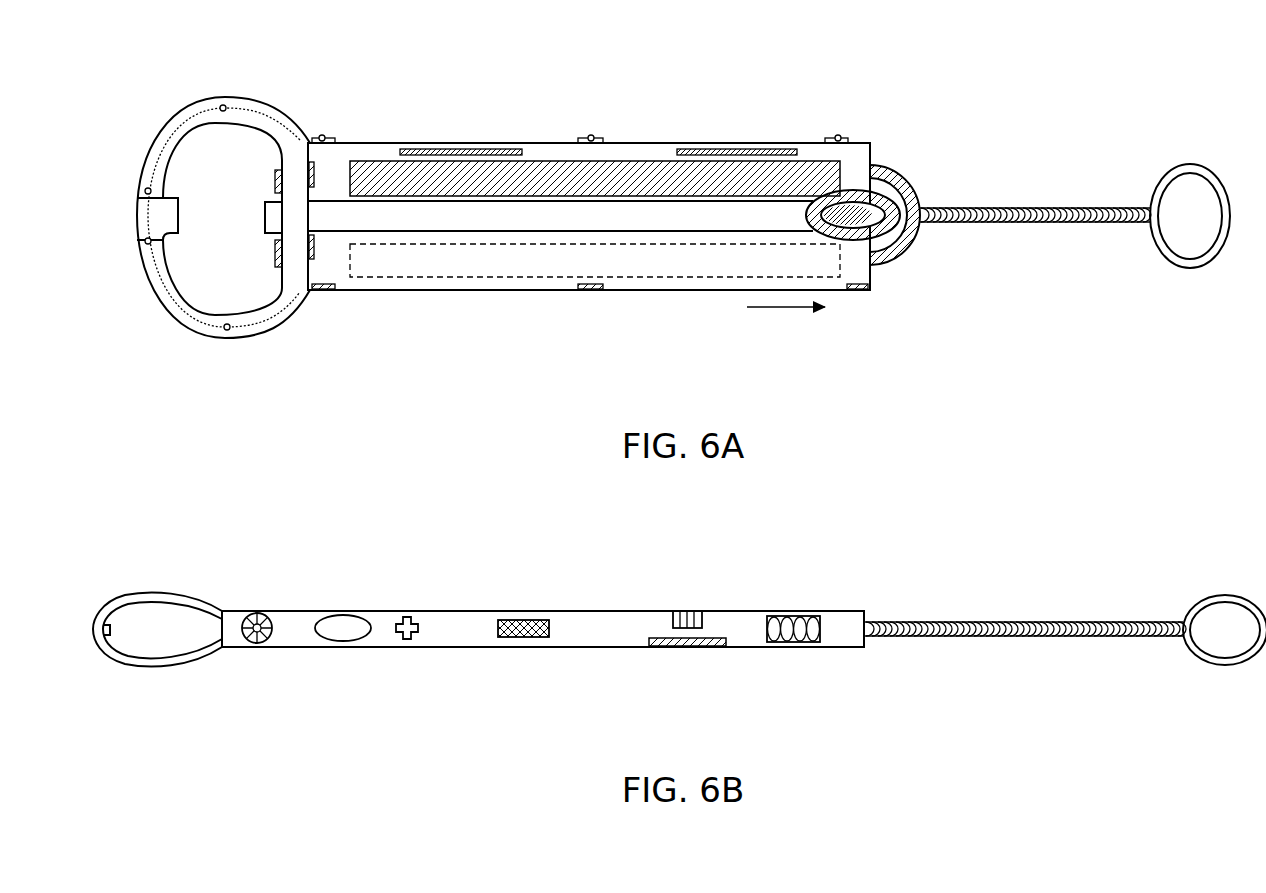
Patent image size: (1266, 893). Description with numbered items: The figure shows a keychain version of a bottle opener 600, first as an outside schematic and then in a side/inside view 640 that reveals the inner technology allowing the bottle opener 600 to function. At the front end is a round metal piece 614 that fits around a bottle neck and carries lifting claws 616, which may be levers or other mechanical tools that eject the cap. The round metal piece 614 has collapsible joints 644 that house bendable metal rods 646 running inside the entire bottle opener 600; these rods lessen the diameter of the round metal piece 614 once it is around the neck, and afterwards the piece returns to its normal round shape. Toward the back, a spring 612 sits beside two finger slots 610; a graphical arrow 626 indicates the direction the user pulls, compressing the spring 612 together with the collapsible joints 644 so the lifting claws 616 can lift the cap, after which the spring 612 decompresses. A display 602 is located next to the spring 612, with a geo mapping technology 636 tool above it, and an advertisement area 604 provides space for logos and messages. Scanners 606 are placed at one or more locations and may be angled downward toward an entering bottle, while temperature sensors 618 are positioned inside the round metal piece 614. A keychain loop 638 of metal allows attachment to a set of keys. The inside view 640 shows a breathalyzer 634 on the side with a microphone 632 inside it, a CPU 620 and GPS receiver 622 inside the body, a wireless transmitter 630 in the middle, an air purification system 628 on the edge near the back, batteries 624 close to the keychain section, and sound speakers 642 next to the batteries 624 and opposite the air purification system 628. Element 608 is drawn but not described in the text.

In FIG. 6A, the bottle opener 600 is at (868, 140).
In FIG. 6A, the display 602 is at (728, 185).
In FIG. 6A, the advertisement area 604 is at (685, 250).
In FIG. 6A, the scanners 606 is at (318, 176).
In FIG. 6A, the hinges / fasteners 608 is at (320, 134).
In FIG. 6A, the finger slots 610 is at (910, 172).
In FIG. 6A, the spring 612 is at (862, 222).
In FIG. 6A, the round metal piece 614 is at (145, 140).
In FIG. 6A, the lifting claws 616 is at (174, 190).
In FIG. 6A, the temperature sensors 618 is at (272, 182).
In FIG. 6B, the CPU 620 is at (344, 648).
In FIG. 6B, the GPS receiver 622 is at (408, 648).
In FIG. 6B, the batteries 624 is at (790, 645).
In FIG. 6A, the graphical arrow 626 is at (783, 310).
In FIG. 6B, the air purification system 628 is at (693, 611).
In FIG. 6B, the wireless transmitter 630 is at (522, 643).
In FIG. 6B, the microphone 632 is at (256, 645).
In FIG. 6B, the breathalyzer 634 is at (259, 612).
In FIG. 6A, the geo mapping technology 636 is at (450, 148).
In FIG. 6A, the keychain loop 638 is at (1188, 275).
In FIG. 6B, the keychain loop 638 is at (1222, 595).
In FIG. 6B, the side/inside view 640 is at (852, 655).
In FIG. 6B, the sound speakers 642 is at (680, 650).
In FIG. 6A, the collapsible joints 644 is at (146, 243).
In FIG. 6A, the bendable metal rods 646 is at (186, 331).